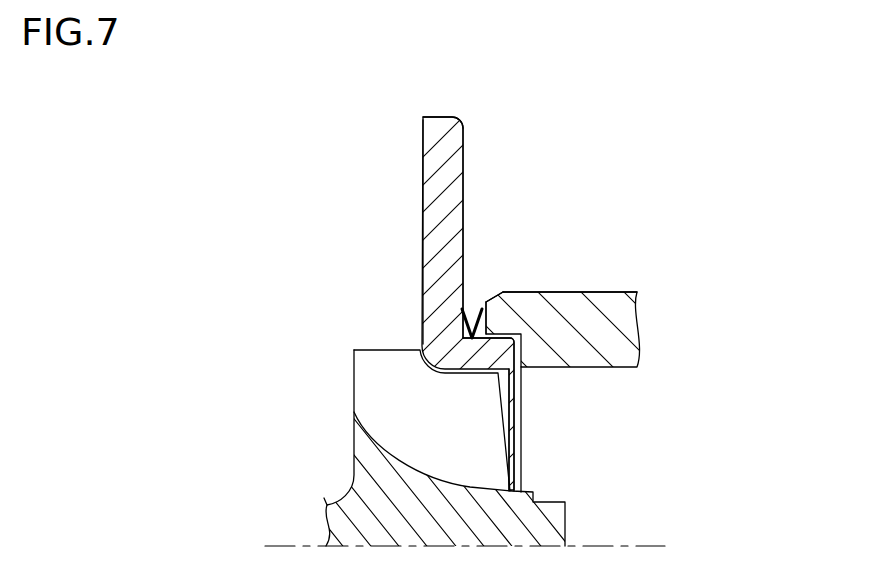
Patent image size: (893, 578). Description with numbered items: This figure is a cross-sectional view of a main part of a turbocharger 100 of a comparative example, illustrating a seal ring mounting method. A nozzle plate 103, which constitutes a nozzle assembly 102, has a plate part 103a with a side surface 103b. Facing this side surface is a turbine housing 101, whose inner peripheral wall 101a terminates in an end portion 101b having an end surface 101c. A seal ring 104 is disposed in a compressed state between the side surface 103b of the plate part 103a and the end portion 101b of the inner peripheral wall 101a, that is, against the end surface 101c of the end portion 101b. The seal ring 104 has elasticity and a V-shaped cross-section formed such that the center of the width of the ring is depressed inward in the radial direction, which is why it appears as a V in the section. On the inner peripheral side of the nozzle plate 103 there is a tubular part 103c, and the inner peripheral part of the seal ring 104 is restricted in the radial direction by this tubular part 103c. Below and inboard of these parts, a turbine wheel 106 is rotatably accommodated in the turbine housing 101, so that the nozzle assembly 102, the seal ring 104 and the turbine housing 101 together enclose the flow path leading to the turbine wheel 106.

The turbocharger 100 is at (258, 233).
The turbine housing 101 is at (635, 275).
The inner peripheral wall 101a is at (568, 287).
The end portion 101b is at (494, 306).
The end surface 101c is at (470, 300).
The nozzle assembly 102 is at (392, 160).
The nozzle plate 103 is at (418, 226).
The plate part 103a is at (438, 135).
The side surface 103b is at (463, 190).
The tubular part 103c is at (511, 378).
The seal ring 104 is at (462, 333).
The turbine wheel 106 is at (350, 457).